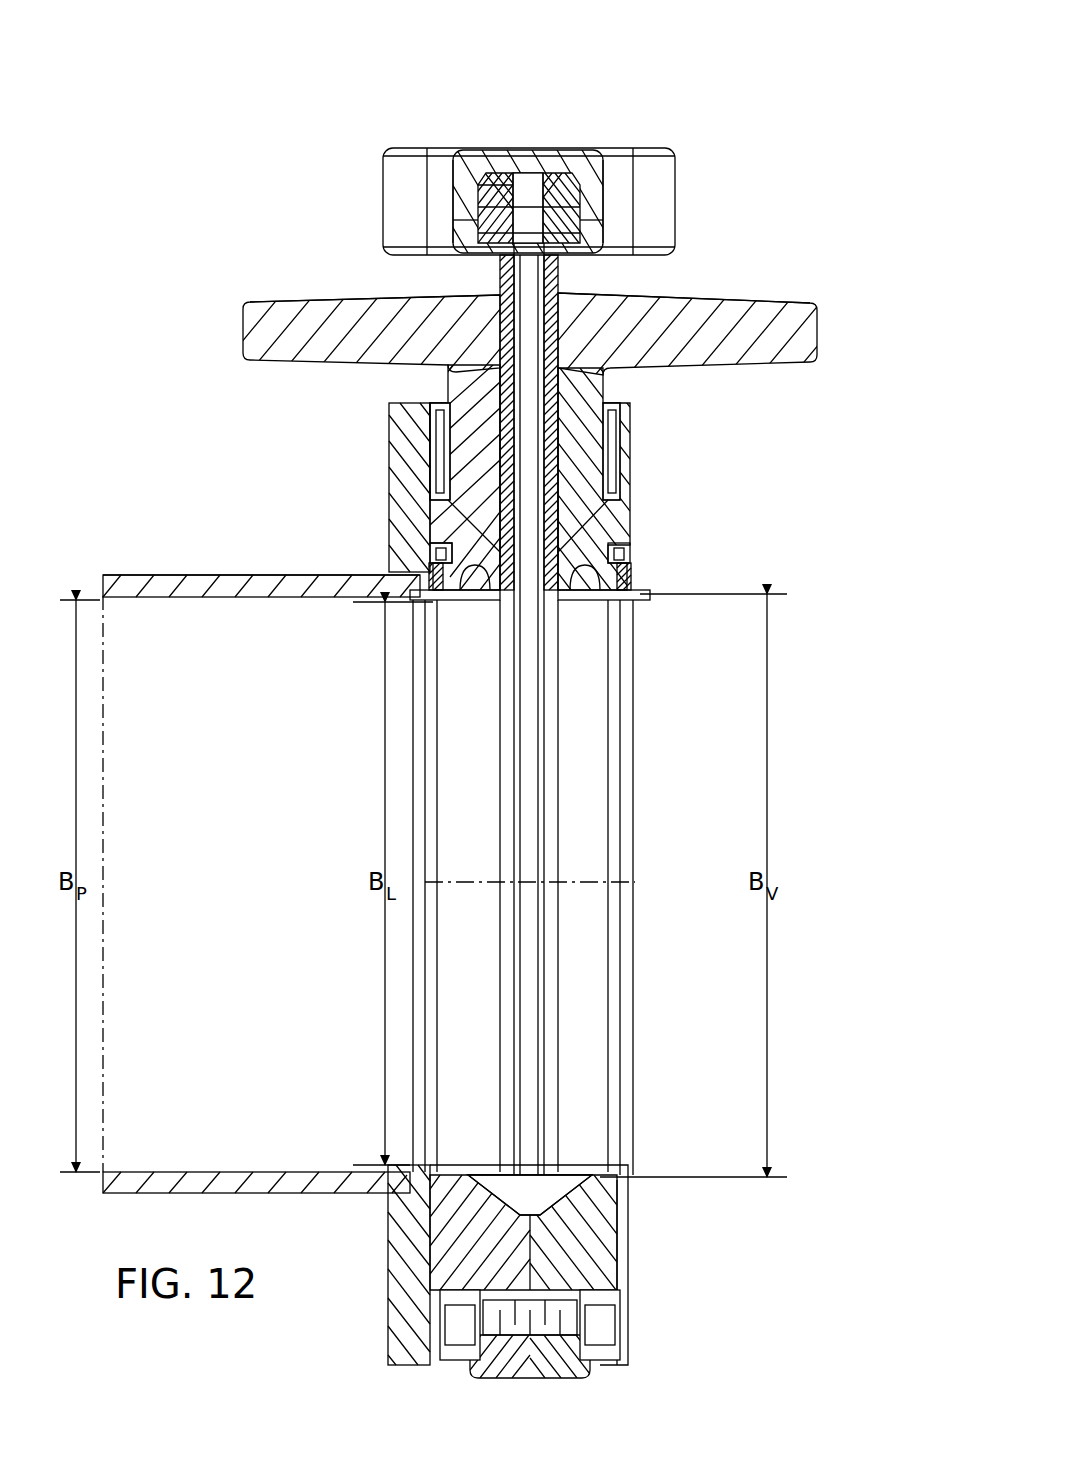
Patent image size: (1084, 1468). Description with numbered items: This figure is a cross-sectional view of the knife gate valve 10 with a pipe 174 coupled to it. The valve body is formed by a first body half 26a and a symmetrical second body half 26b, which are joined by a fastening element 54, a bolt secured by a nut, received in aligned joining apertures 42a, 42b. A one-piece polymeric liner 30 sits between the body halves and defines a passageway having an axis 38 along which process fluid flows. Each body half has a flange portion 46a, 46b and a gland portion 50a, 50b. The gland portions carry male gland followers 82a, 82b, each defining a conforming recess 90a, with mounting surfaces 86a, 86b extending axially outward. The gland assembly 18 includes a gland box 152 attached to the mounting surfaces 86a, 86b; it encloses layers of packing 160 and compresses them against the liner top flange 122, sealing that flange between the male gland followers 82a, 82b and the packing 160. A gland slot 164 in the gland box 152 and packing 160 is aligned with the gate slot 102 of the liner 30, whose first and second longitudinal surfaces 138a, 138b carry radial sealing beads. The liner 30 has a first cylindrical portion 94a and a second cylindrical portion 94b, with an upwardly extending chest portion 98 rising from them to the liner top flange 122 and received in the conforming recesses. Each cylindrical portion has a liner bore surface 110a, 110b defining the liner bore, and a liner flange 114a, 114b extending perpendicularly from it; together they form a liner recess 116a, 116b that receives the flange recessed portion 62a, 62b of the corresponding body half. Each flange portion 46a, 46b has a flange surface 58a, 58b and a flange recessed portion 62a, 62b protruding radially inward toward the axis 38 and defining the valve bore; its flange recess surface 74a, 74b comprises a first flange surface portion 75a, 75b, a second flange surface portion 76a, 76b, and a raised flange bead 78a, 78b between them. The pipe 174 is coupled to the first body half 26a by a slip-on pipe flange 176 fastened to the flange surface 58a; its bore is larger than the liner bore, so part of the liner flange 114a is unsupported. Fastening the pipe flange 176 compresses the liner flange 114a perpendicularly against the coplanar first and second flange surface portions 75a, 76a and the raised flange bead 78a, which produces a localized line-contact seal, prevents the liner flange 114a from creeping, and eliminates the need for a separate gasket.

The knife gate valve 10 is at (178, 118).
The gland assembly 18 is at (342, 118).
The gland box 152 is at (470, 165).
The packing 160 is at (500, 148).
The gland slot 164 is at (525, 148).
The first body half 26a is at (258, 205).
The second body half 26b is at (773, 185).
The liner top flange 122 is at (480, 215).
The male gland follower 82a is at (488, 245).
The male gland follower 82b is at (590, 236).
The conforming recess 90a is at (505, 292).
The gate slot 102 is at (555, 310).
The mounting surface 86a is at (305, 300).
The mounting surface 86b is at (760, 300).
The gland portion 50a is at (195, 335).
The gland portion 50b is at (865, 335).
The first longitudinal surface 138a is at (518, 455).
The second longitudinal surface 138b is at (540, 440).
The pipe flange 176 is at (410, 440).
The upwardly extending chest portion 98 is at (618, 430).
The flange portion 46a is at (218, 435).
The flange portion 46b is at (832, 425).
The first flange surface portion 75a is at (460, 542).
The first flange surface portion 75b is at (600, 542).
The flange surface 58a is at (432, 447).
The flange surface 58b is at (617, 455).
The raised flange bead 78a is at (415, 558).
The raised flange bead 78b is at (645, 558).
The flange recess surface 74a is at (415, 562).
The flange recess surface 74b is at (645, 562).
The flange recessed portion 62a is at (462, 545).
The flange recessed portion 62b is at (597, 545).
The second flange surface portion 76a is at (420, 570).
The second flange surface portion 76b is at (640, 573).
The pipe 174 is at (197, 592).
The liner flange 114a is at (398, 590).
The liner flange 114b is at (622, 600).
The first cylindrical portion 94a is at (450, 618).
The second cylindrical portion 94b is at (607, 617).
The liner bore surface 110a is at (480, 608).
The liner bore surface 110b is at (592, 606).
The liner recess 116a is at (492, 612).
The liner recess 116b is at (572, 612).
The liner 30 is at (818, 905).
The axis 38 is at (597, 895).
The fastening element 54 is at (595, 1310).
The joining apertures 42a is at (450, 1328).
The joining apertures 42b is at (598, 1328).